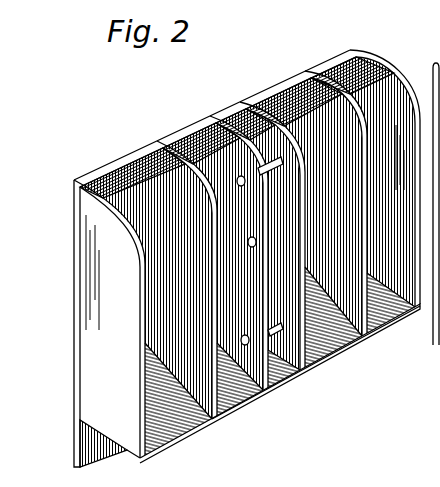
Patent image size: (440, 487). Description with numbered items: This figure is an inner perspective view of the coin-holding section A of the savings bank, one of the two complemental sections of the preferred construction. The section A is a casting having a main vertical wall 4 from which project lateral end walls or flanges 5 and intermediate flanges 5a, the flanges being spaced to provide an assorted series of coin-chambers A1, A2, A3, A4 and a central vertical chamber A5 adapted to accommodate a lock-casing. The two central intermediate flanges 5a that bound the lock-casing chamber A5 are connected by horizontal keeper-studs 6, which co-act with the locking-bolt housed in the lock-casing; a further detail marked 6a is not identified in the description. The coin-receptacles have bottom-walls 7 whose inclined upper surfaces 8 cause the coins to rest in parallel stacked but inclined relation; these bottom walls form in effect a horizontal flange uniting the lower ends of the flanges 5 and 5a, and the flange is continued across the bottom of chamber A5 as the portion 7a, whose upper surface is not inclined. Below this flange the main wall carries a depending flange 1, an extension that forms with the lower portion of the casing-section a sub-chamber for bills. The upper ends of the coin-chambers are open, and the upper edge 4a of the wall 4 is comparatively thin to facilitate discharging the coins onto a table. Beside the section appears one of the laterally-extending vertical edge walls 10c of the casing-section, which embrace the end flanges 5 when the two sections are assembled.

The coin-holding section A is at (221, 238).
The coin-chamber A1 is at (130, 172).
The coin-chamber A2 is at (178, 150).
The coin-chamber A3 is at (283, 96).
The coin-chamber A4 is at (356, 66).
The lock-casing chamber A5 is at (237, 118).
The depending flange 1 is at (96, 432).
The main vertical wall 4 is at (76, 420).
The upper edge of vertical wall 4a is at (74, 178).
The lateral end walls or flanges 5 is at (392, 71).
The intermediate flanges 5a is at (224, 393).
The keeper-studs 6 is at (274, 169).
The stud hole 6a is at (306, 244).
The bottom-walls 7 is at (168, 441).
The bottom flange portion 7a is at (291, 379).
The inclined upper surfaces 8 is at (152, 412).
The vertical edge walls 10c is at (433, 333).